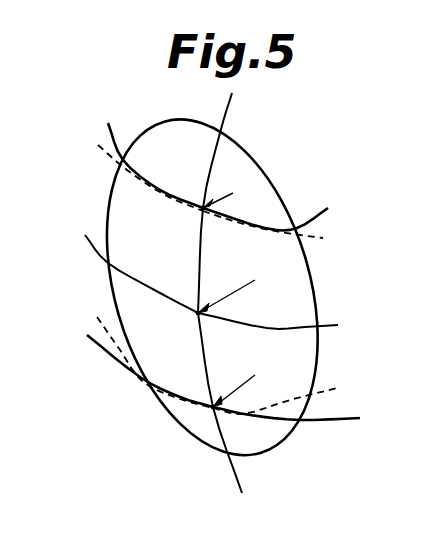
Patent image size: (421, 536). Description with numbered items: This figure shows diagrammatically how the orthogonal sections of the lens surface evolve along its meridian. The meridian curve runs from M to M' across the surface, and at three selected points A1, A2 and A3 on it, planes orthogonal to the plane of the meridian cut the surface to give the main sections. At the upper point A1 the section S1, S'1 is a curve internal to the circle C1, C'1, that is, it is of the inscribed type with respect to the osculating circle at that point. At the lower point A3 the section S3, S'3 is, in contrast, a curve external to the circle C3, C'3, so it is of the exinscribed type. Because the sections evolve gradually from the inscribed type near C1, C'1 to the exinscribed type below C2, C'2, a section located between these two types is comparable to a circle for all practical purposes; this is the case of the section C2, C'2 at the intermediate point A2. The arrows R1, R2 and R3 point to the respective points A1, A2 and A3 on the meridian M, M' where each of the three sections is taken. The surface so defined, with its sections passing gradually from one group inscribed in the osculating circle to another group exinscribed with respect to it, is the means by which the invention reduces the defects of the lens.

The meridian curve end point M is at (225, 202).
The meridian curve end point M' is at (234, 407).
The section end point S1 is at (150, 154).
The section end point S'1 is at (282, 212).
The circle end point C1 is at (135, 178).
The circle end point C'1 is at (281, 233).
The circle end point C2 is at (138, 274).
The circle end point C'2 is at (283, 321).
The circle end point C3 is at (144, 349).
The circle end point C'3 is at (289, 394).
The section end point S3 is at (134, 371).
The section end point S'3 is at (297, 425).
The radius direction at A1 R1 is at (220, 189).
The radius direction at A2 R2 is at (241, 287).
The radius direction at A3 R3 is at (245, 382).
The point on meridian A1 is at (185, 221).
The point on meridian A2 is at (180, 324).
The point on meridian A3 is at (200, 421).